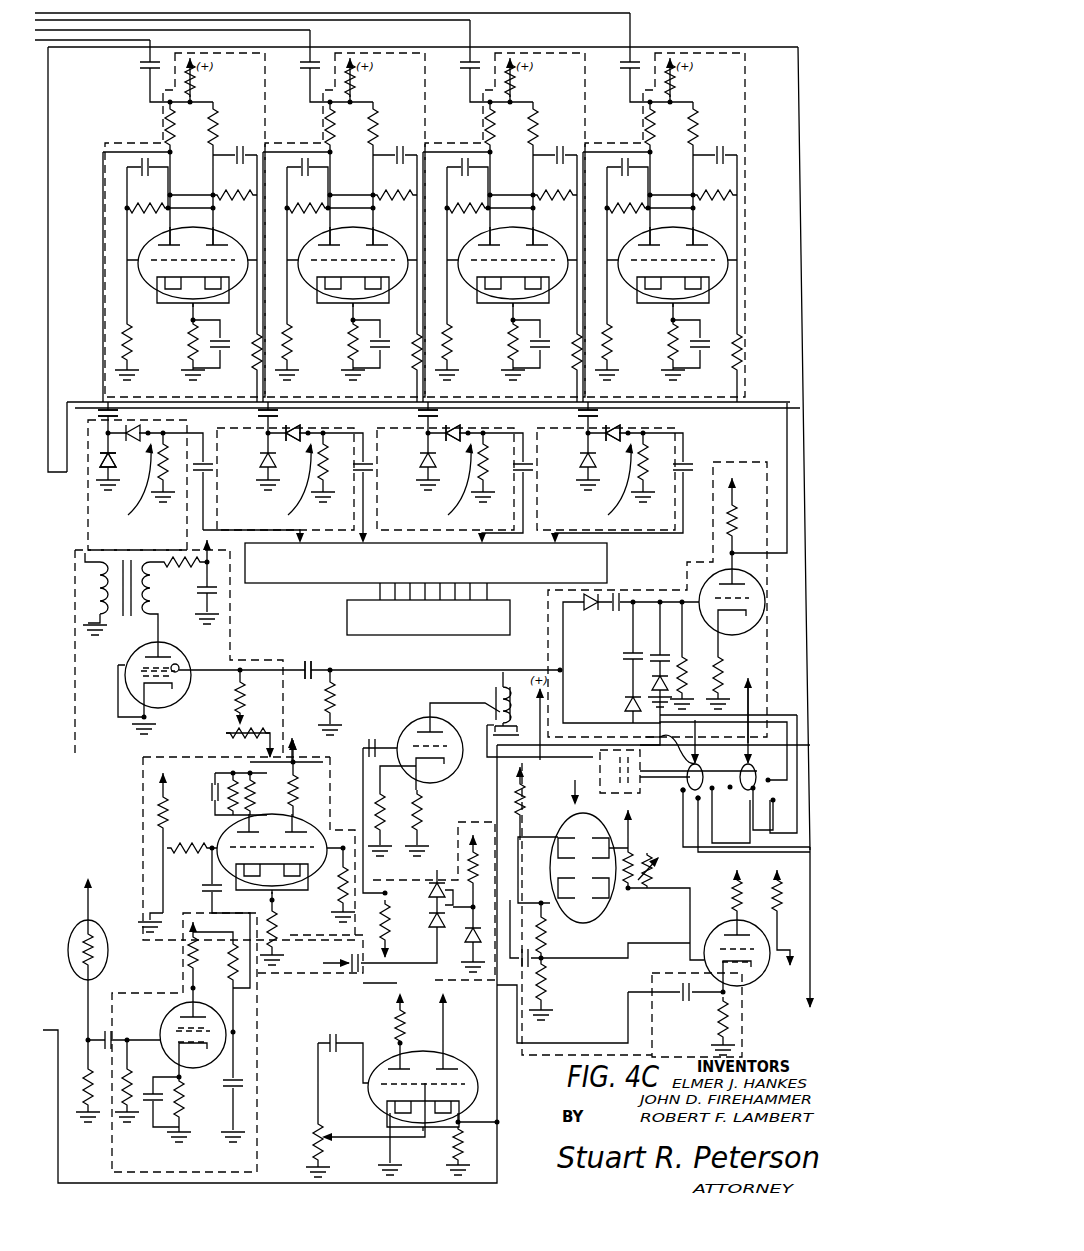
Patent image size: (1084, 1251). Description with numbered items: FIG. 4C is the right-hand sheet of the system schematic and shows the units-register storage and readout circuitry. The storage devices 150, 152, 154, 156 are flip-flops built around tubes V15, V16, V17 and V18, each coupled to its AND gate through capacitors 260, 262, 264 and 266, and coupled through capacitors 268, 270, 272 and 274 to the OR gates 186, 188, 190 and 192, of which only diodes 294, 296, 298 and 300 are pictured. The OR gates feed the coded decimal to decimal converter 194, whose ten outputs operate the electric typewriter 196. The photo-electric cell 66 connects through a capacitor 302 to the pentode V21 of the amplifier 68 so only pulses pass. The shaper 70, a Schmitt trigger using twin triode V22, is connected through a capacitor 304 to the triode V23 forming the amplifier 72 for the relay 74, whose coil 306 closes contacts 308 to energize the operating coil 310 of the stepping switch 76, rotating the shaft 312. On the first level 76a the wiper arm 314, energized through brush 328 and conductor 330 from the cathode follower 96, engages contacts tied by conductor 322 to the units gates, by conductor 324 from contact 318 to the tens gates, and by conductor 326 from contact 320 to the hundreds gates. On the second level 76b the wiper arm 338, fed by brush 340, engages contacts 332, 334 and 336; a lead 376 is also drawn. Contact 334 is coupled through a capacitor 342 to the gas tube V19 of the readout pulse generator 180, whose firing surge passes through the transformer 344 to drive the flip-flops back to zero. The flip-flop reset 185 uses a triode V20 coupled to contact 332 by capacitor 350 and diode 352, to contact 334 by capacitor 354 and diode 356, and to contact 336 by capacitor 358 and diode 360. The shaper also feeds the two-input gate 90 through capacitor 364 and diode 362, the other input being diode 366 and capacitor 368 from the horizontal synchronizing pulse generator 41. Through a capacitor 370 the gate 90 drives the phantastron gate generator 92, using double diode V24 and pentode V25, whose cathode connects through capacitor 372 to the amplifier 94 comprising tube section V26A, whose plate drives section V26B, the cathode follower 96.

The storage device 150 is at (178, 221).
The storage device 152 is at (338, 216).
The storage device 154 is at (498, 211).
The storage device 156 is at (658, 207).
The capacitor 260 is at (139, 64).
The capacitor 262 is at (286, 58).
The capacitor 264 is at (446, 53).
The capacitor 266 is at (606, 51).
The tube V15 is at (226, 240).
The tube V16 is at (354, 256).
The tube V17 is at (515, 256).
The tube V18 is at (674, 256).
The conductor 322 is at (52, 155).
The OR gate 186 is at (176, 476).
The OR gate 188 is at (294, 473).
The OR gate 190 is at (454, 473).
The OR gate 192 is at (642, 471).
The capacitor 268 is at (118, 418).
The capacitor 270 is at (256, 410).
The capacitor 272 is at (416, 410).
The capacitor 274 is at (576, 410).
The diode 294 is at (123, 459).
The diode 296 is at (301, 424).
The diode 298 is at (471, 424).
The diode 300 is at (628, 424).
The coded decimal to decimal converter 194 is at (289, 600).
The electric typewriter 196 is at (344, 611).
The readout pulse generator 180 is at (316, 669).
The transformer 344 is at (156, 624).
The gas tube V19 is at (191, 696).
The capacitor 342 is at (313, 663).
The capacitor 304 is at (377, 745).
The triode tube V23 is at (398, 732).
The amplifier 72 is at (426, 704).
The relay 74 is at (486, 706).
The coil 306 is at (518, 721).
The normally open contacts 308 is at (519, 739).
The flip-flop reset 185 is at (676, 573).
The triode V20 is at (758, 586).
The capacitor 354 is at (614, 594).
The diode 356 is at (582, 602).
The capacitor 350 is at (624, 661).
The diode 352 is at (626, 689).
The capacitor 358 is at (684, 658).
The diode 360 is at (709, 681).
The brush 340 is at (758, 700).
The stepping switch 76 is at (682, 845).
The first contact level 76a is at (708, 744).
The second contact level 76b is at (754, 754).
The brush 328 is at (657, 731).
The operating coil 310 is at (663, 754).
The shaft 312 is at (663, 766).
The first wiper arm 314 is at (723, 752).
The fixed contact 336 is at (727, 763).
The wiper arm 338 is at (773, 764).
The contact 320 is at (665, 786).
The contact 318 is at (674, 799).
The conductor 324 is at (659, 812).
The conductor 326 is at (661, 827).
The fixed contact 334 is at (749, 816).
The fixed contact 332 is at (783, 826).
The conductor 376 is at (737, 837).
The shaper 70 is at (221, 864).
The twin triode V22 is at (225, 830).
The photo-electric cell 66 is at (84, 924).
The capacitor 302 is at (102, 1032).
The amplifier 68 is at (184, 1039).
The pentode V21 is at (162, 1026).
The capacitor 364 is at (373, 870).
The diode 362 is at (444, 877).
The diode 366 is at (457, 898).
The capacitor 368 is at (366, 944).
The horizontal synchronizing pulse generator 41 is at (302, 989).
The gate 90 is at (594, 904).
The double diode V24 is at (608, 924).
The capacitor 370 is at (530, 964).
The conductor 330 is at (474, 785).
The pentode tube V25 is at (752, 920).
The capacitor 372 is at (692, 1001).
The gate generator 92 is at (433, 1077).
The tube section V26A is at (380, 1112).
The tube section V26B is at (450, 1052).
The amplifier 94 is at (364, 1094).
The cathode follower 96 is at (458, 1126).